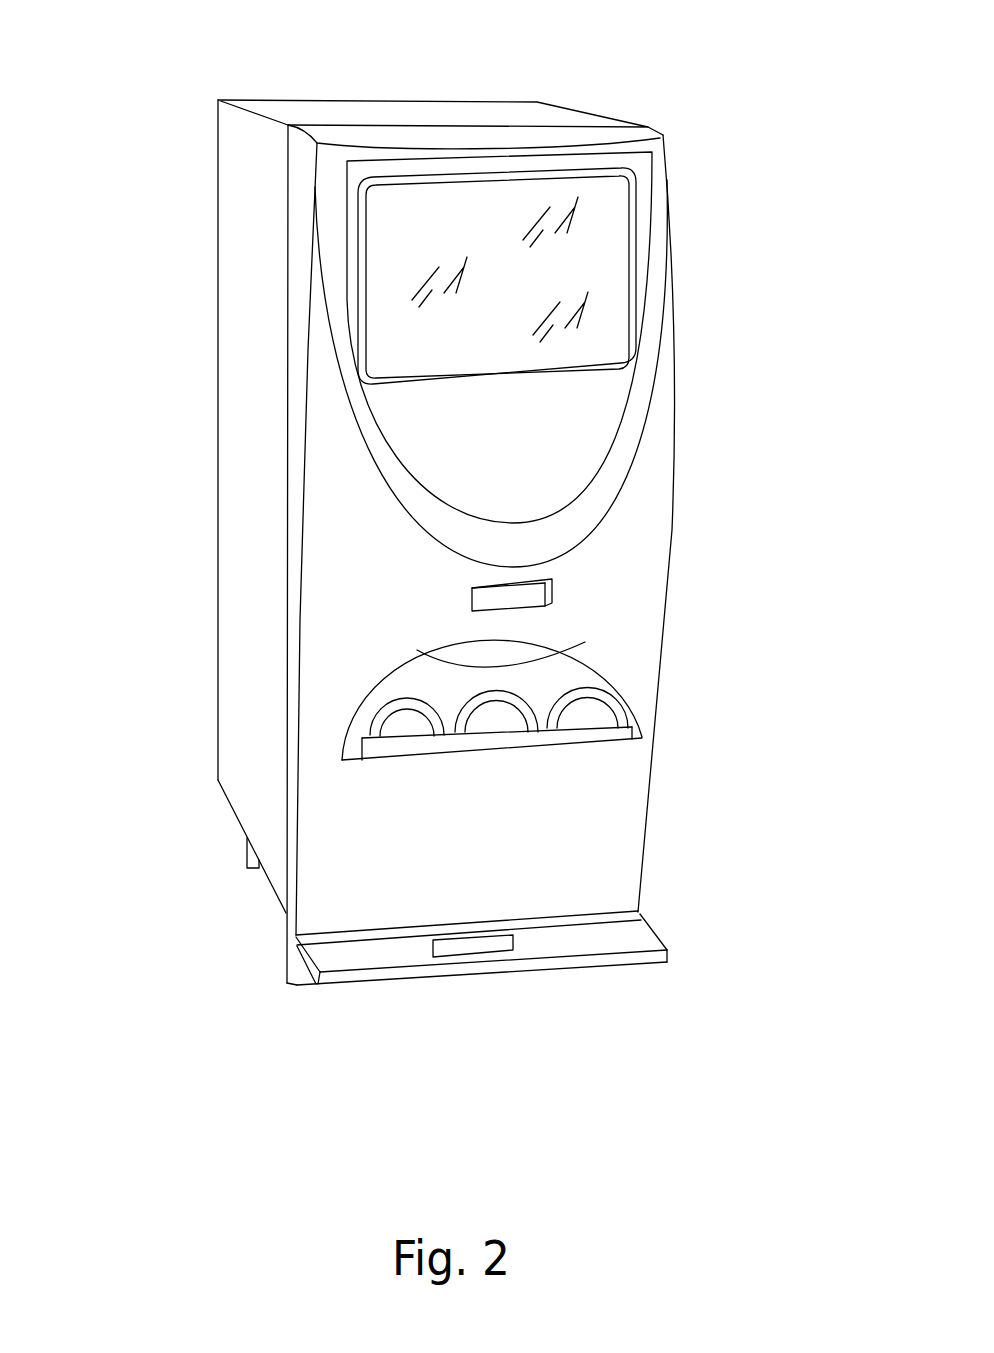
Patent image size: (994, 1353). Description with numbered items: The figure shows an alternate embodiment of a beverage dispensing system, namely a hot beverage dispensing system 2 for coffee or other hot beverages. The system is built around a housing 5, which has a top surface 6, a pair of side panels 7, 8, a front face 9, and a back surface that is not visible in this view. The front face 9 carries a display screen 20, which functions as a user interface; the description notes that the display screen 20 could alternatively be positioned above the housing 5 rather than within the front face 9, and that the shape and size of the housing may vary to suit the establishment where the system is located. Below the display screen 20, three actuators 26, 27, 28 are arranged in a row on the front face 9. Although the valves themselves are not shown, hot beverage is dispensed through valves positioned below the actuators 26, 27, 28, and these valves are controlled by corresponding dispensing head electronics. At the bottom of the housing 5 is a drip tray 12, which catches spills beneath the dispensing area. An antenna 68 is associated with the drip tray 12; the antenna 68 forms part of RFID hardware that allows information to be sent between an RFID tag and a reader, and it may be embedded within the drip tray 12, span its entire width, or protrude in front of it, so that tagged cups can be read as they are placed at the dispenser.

The hot beverage dispensing system 2 is at (658, 88).
The housing 5 is at (213, 299).
The top surface 6 is at (448, 115).
The side panel 7 is at (232, 522).
The side panel 8 is at (675, 465).
The front face 9 is at (630, 557).
The drip tray 12 is at (343, 960).
The display screen 20 is at (605, 267).
The actuator 26 is at (393, 718).
The actuator 27 is at (498, 715).
The actuator 28 is at (602, 713).
The antenna 68 is at (493, 950).